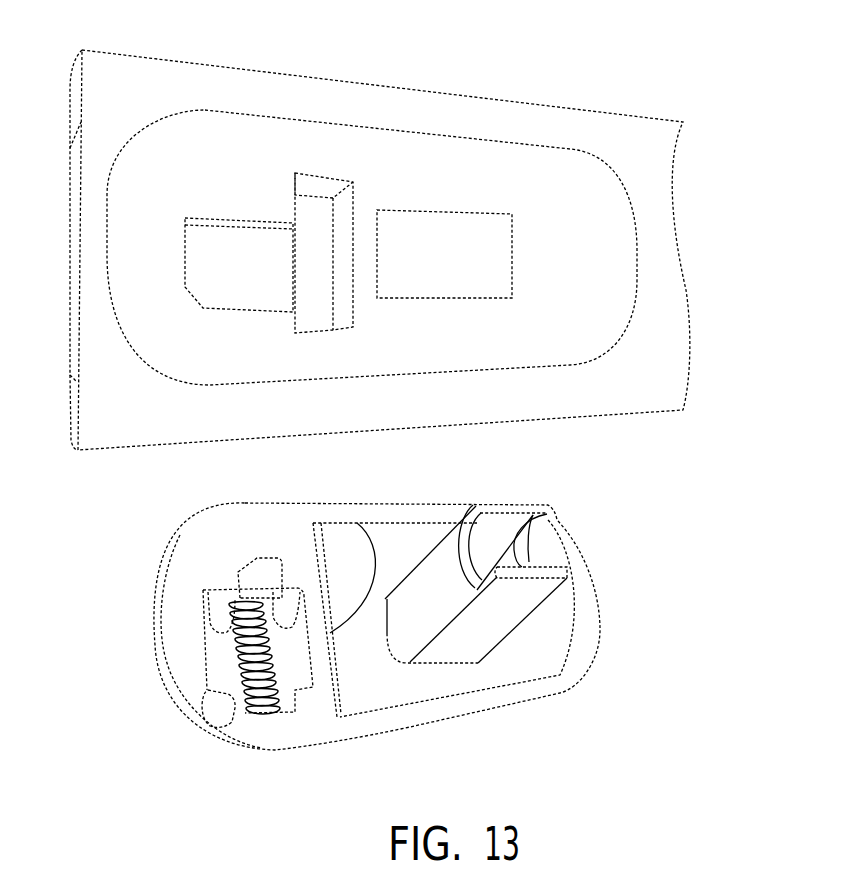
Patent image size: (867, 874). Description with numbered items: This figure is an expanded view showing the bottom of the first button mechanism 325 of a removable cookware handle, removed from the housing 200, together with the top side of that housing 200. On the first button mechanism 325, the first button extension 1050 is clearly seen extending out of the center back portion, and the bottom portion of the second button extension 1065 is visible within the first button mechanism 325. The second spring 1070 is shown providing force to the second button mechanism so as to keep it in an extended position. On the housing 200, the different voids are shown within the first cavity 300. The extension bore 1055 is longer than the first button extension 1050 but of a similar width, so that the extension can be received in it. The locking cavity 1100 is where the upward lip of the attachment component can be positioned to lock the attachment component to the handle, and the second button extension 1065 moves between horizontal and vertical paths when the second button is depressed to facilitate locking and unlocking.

The housing 200 is at (483, 108).
The first cavity 300 is at (273, 137).
The locking cavity 1100 is at (327, 218).
The extension bore 1055 is at (493, 267).
The first button mechanism 325 is at (180, 652).
The second button extension 1065 is at (267, 572).
The second spring 1070 is at (230, 683).
The first button extension 1050 is at (492, 632).